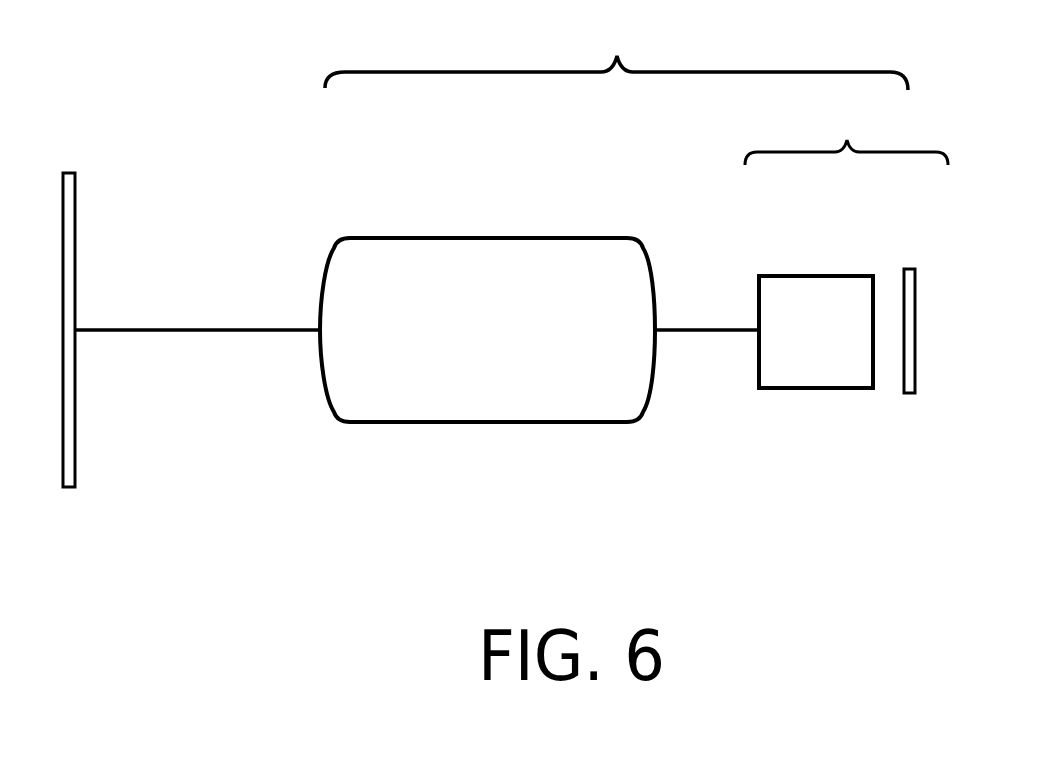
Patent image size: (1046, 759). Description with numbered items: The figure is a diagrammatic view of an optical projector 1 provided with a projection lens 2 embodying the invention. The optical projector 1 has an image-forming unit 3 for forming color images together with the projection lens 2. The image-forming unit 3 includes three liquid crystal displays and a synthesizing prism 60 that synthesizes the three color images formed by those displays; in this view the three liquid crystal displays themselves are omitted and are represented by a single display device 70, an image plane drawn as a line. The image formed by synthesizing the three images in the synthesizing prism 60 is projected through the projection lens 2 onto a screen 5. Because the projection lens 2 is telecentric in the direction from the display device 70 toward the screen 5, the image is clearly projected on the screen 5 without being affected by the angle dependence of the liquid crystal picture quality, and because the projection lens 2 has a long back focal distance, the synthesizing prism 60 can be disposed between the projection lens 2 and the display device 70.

The optical projector 1 is at (616, 45).
The projection lens 2 is at (562, 238).
The image-forming unit 3 is at (846, 125).
The screen 5 is at (76, 191).
The synthesizing prism 60 is at (790, 275).
The display device 70 is at (910, 268).